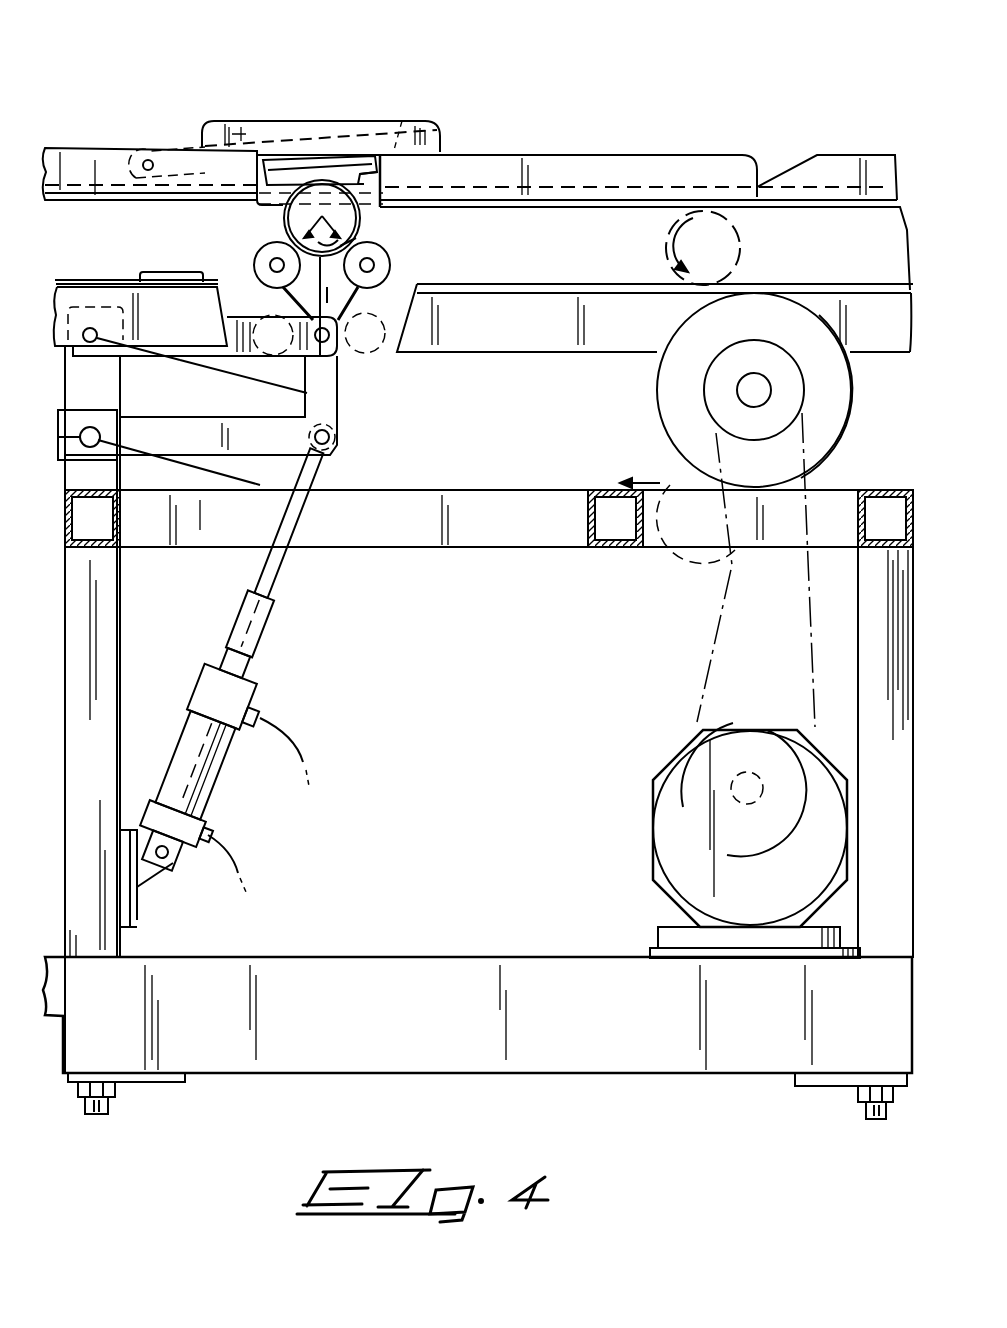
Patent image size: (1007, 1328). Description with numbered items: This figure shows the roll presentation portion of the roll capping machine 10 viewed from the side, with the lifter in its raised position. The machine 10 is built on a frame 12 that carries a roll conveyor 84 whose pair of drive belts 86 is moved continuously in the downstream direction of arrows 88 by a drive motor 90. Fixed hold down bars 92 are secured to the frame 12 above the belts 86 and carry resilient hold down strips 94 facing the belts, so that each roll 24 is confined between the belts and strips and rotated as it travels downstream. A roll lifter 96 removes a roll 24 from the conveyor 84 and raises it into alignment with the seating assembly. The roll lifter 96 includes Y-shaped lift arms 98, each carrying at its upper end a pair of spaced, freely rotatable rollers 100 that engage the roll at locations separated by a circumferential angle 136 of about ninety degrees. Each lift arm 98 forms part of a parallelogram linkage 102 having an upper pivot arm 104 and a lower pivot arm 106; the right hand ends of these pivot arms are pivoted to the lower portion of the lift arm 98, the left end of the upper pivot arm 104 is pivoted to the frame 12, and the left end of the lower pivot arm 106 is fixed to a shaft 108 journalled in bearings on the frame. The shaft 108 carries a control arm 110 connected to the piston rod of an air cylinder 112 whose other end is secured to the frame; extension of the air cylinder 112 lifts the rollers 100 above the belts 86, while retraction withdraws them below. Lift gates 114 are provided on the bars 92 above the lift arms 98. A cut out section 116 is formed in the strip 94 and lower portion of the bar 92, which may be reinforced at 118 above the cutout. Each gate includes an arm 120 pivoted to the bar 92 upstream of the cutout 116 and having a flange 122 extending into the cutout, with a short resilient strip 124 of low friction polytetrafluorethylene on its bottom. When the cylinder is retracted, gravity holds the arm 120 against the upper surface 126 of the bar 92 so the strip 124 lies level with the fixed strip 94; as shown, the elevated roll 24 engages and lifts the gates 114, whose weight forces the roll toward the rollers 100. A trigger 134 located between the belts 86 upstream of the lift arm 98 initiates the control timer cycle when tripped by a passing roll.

The roll capping machine 10 is at (221, 1097).
The frame 12 is at (546, 548).
The roll 24 is at (284, 221).
The roll conveyor 84 is at (120, 148).
The drive belts 86 is at (83, 275).
The arrows 88 is at (540, 267).
The drive motor 90 is at (655, 825).
The fixed hold down bars 92 is at (567, 167).
The resilient hold down strips 94 is at (410, 202).
The roll lifter 96 is at (246, 683).
The lift arms 98 is at (337, 386).
The rollers 100 is at (253, 258).
The parallelogram linkage 102 is at (251, 357).
The upper pivot arm 104 is at (147, 297).
The lower pivot arm 106 is at (197, 405).
The shaft 108 is at (100, 437).
The control arm 110 is at (258, 487).
The air cylinder 112 is at (207, 790).
The lift gates 114 is at (352, 114).
The cut out section 116 is at (382, 184).
The reinforcement 118 is at (425, 137).
The arm 120 is at (272, 112).
The flange 122 is at (307, 162).
The short resilient strip 124 is at (360, 160).
The upper surface 126 is at (242, 183).
The trigger 134 is at (170, 273).
The circumferential angle 136 is at (355, 234).